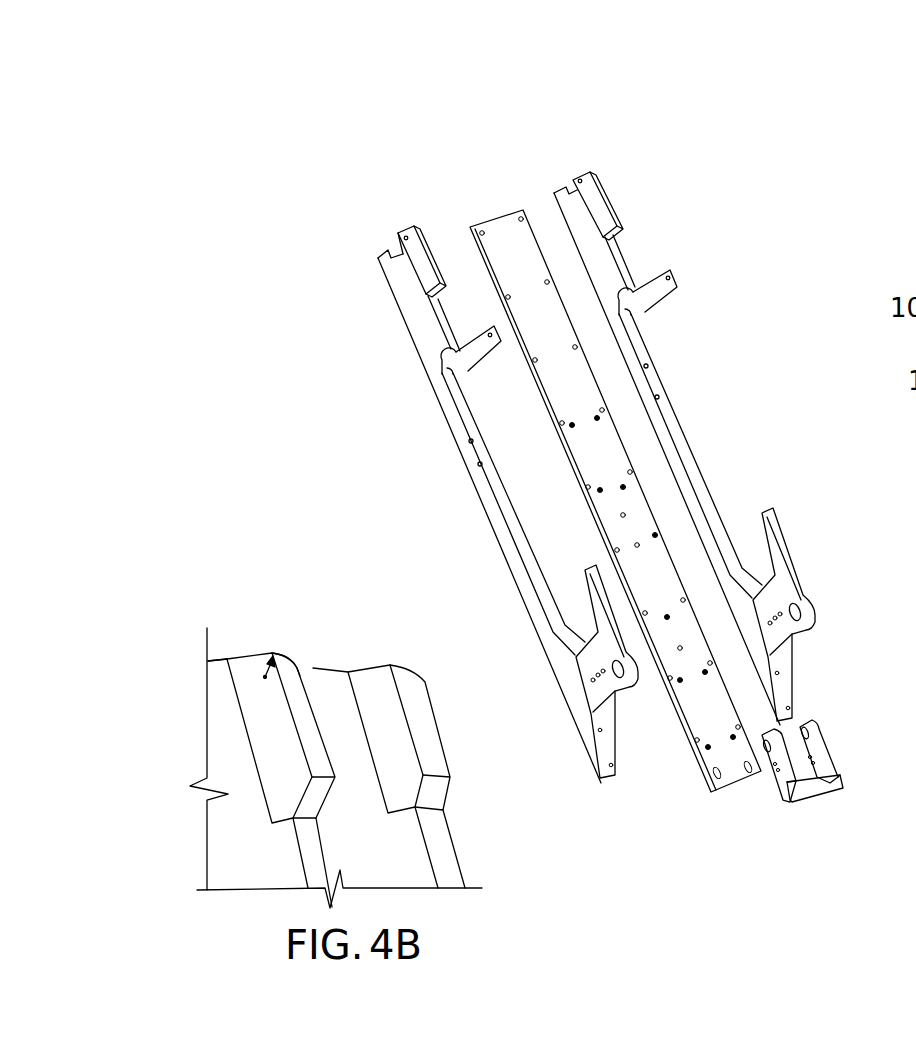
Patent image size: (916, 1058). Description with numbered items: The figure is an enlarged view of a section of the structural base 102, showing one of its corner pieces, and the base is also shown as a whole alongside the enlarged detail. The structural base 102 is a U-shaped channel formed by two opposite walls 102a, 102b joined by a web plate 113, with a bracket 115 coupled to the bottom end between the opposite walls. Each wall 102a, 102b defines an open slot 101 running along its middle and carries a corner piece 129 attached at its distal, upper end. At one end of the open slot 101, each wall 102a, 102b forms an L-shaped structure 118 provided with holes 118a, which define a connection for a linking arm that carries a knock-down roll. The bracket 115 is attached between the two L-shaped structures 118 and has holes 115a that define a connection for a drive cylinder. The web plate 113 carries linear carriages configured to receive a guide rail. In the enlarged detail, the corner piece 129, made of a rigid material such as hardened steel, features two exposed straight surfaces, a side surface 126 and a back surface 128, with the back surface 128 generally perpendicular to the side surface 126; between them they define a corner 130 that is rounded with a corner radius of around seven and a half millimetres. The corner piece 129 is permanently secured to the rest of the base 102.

The structural base 102 is at (680, 102).
The wall 102a is at (418, 333).
The wall 102b is at (623, 262).
The open slot 101 is at (503, 505).
The web plate 113 is at (508, 224).
The corner piece 129 is at (416, 229).
The side surface 126 is at (416, 259).
The back surface 128 is at (243, 652).
The corner 130 is at (297, 657).
The L-shaped structure 118 is at (812, 562).
The holes 118a is at (805, 607).
The bracket 115 is at (827, 787).
The holes 115a is at (810, 727).